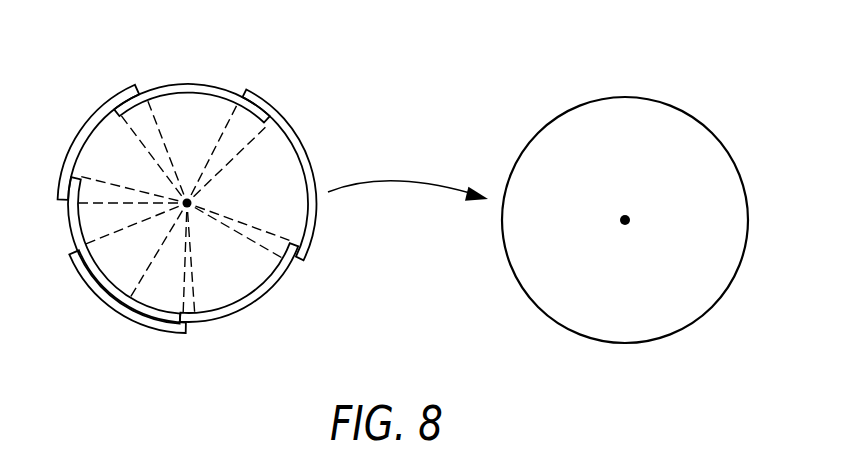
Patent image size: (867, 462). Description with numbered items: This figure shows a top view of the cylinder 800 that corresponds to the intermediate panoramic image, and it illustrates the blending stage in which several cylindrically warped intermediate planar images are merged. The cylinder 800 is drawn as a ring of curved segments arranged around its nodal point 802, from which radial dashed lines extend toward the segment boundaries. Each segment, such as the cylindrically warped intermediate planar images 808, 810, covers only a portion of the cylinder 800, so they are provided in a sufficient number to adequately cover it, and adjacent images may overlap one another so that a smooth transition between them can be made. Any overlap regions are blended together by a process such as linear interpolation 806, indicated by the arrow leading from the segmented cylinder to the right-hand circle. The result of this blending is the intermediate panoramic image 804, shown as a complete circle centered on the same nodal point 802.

The cylinder 800 is at (189, 188).
The nodal point 802 is at (655, 197).
The intermediate panoramic image 804 is at (687, 113).
The linear interpolation 806 is at (397, 182).
The intermediate planar image 808 is at (188, 344).
The intermediate planar image 810 is at (327, 255).